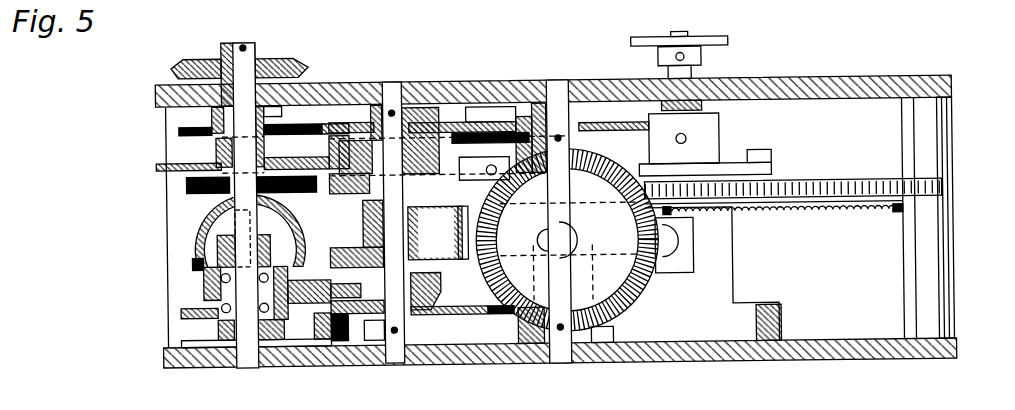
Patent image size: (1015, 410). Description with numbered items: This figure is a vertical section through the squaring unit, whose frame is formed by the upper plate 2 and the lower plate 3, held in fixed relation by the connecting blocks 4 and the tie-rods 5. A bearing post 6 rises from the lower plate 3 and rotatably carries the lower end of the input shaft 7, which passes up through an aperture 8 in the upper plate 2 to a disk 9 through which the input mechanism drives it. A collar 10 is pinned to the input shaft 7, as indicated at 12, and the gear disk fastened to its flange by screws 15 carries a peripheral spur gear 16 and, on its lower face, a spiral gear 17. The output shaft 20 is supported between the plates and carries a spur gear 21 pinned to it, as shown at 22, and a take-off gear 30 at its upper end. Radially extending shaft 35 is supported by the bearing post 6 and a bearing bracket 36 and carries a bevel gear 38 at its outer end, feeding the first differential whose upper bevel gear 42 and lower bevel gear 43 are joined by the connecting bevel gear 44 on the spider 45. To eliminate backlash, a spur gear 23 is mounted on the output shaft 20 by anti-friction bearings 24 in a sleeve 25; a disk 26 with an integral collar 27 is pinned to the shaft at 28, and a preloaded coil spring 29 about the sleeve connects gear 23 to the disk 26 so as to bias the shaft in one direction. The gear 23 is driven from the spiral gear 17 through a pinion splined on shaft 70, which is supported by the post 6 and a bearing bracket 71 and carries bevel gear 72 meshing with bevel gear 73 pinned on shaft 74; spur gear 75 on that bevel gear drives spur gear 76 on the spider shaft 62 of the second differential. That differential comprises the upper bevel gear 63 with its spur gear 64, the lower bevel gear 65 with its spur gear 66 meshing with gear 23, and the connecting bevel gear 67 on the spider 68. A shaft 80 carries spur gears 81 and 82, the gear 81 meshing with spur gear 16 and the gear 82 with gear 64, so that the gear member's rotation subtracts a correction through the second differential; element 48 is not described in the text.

The upper plate 2 is at (905, 80).
The lower plate 3 is at (898, 354).
The connecting blocks 4 is at (170, 112).
The tie-rods 5 is at (935, 139).
The bearing post 6 is at (733, 281).
The input shaft 7 is at (693, 72).
The aperture 8 is at (740, 80).
The disk 9 is at (725, 40).
The collar 10 is at (722, 119).
The pin 12 is at (690, 140).
The screws 15 is at (772, 153).
The spur gear 16 is at (845, 184).
The spiral gear 17 is at (835, 216).
The output shaft 20 is at (245, 362).
The spur gear 21 is at (157, 161).
The pin 22 is at (240, 144).
The spur gear 23 is at (217, 323).
The anti-friction bearings 24 is at (190, 336).
The sleeve 25 is at (192, 304).
The disk 26 is at (192, 259).
The collar 27 is at (220, 238).
The pin 28 is at (240, 245).
The coil spring 29 is at (203, 275).
The take-off gear 30 is at (183, 59).
The shaft 35 is at (507, 255).
The bearing bracket 36 is at (340, 365).
The bevel gear 38 is at (323, 350).
The upper bevel gear 42 is at (230, 178).
The lower bevel gear 43 is at (195, 292).
The connecting bevel gear 44 is at (203, 208).
The spider 45 is at (270, 224).
The spline 48 is at (200, 118).
The spider shaft 62 is at (388, 92).
The upper bevel gear 63 is at (432, 215).
The spur gear 64 is at (448, 136).
The lower bevel gear 65 is at (352, 345).
The spur gear 66 is at (460, 318).
The connecting bevel gear 67 is at (432, 250).
The spider 68 is at (435, 233).
The shaft 70 is at (573, 240).
The bearing bracket 71 is at (604, 348).
The bevel gear 72 is at (650, 292).
The bevel gear 73 is at (582, 185).
The shaft 74 is at (570, 280).
The spur gear 75 is at (603, 122).
The spur gear 76 is at (353, 122).
The shaft 80 is at (518, 330).
The spur gear 81 is at (504, 225).
The spur gear 82 is at (523, 133).